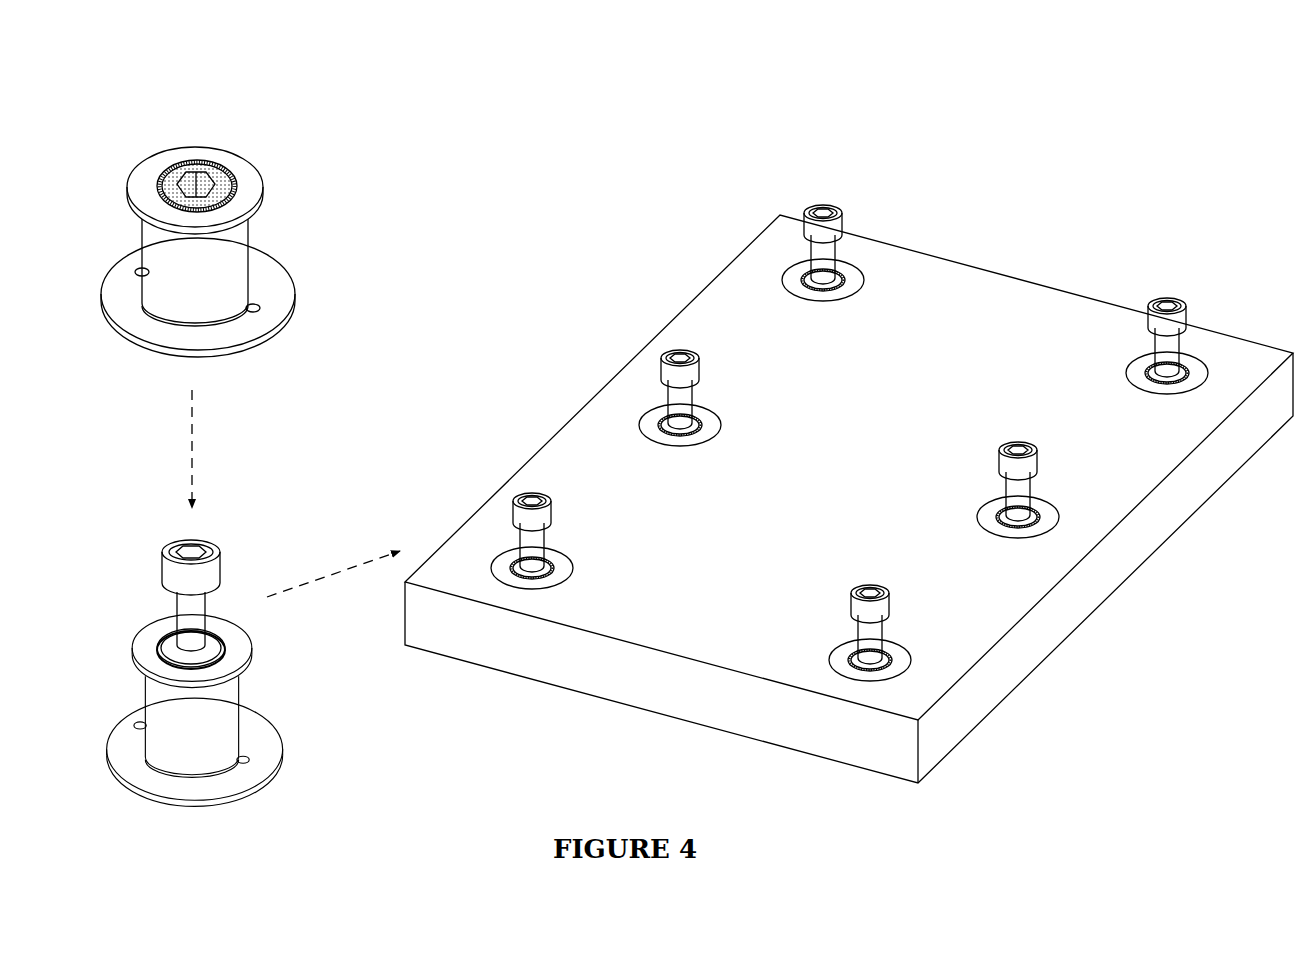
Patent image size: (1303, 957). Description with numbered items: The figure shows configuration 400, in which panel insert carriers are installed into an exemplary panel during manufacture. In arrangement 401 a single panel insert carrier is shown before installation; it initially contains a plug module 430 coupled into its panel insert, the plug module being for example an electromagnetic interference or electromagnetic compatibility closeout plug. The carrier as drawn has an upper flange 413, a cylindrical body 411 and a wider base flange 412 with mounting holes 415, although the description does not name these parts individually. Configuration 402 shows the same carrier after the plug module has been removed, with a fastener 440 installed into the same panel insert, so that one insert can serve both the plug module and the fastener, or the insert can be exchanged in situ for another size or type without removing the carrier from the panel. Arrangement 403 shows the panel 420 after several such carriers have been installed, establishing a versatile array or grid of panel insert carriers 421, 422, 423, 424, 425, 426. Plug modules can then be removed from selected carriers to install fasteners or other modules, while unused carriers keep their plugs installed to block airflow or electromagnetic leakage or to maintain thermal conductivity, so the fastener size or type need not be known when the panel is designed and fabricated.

The configuration 400 is at (95, 80).
The arrangement 401 is at (310, 218).
The configuration 402 is at (276, 659).
The arrangement 403 is at (566, 352).
The cylindrical body of standoff 411 is at (166, 272).
The base flange 412 is at (166, 244).
The top flange 413 is at (164, 190).
The mounting holes 415 is at (175, 331).
The panel 420 is at (876, 360).
The panel insert carrier 421 is at (782, 284).
The panel insert carrier 422 is at (637, 426).
The panel insert carrier 423 is at (488, 574).
The panel insert carrier 424 is at (829, 659).
The panel insert carrier 425 is at (974, 518).
The panel insert carrier 426 is at (1124, 370).
The plug module 430 is at (226, 171).
The fastener 440 is at (172, 605).